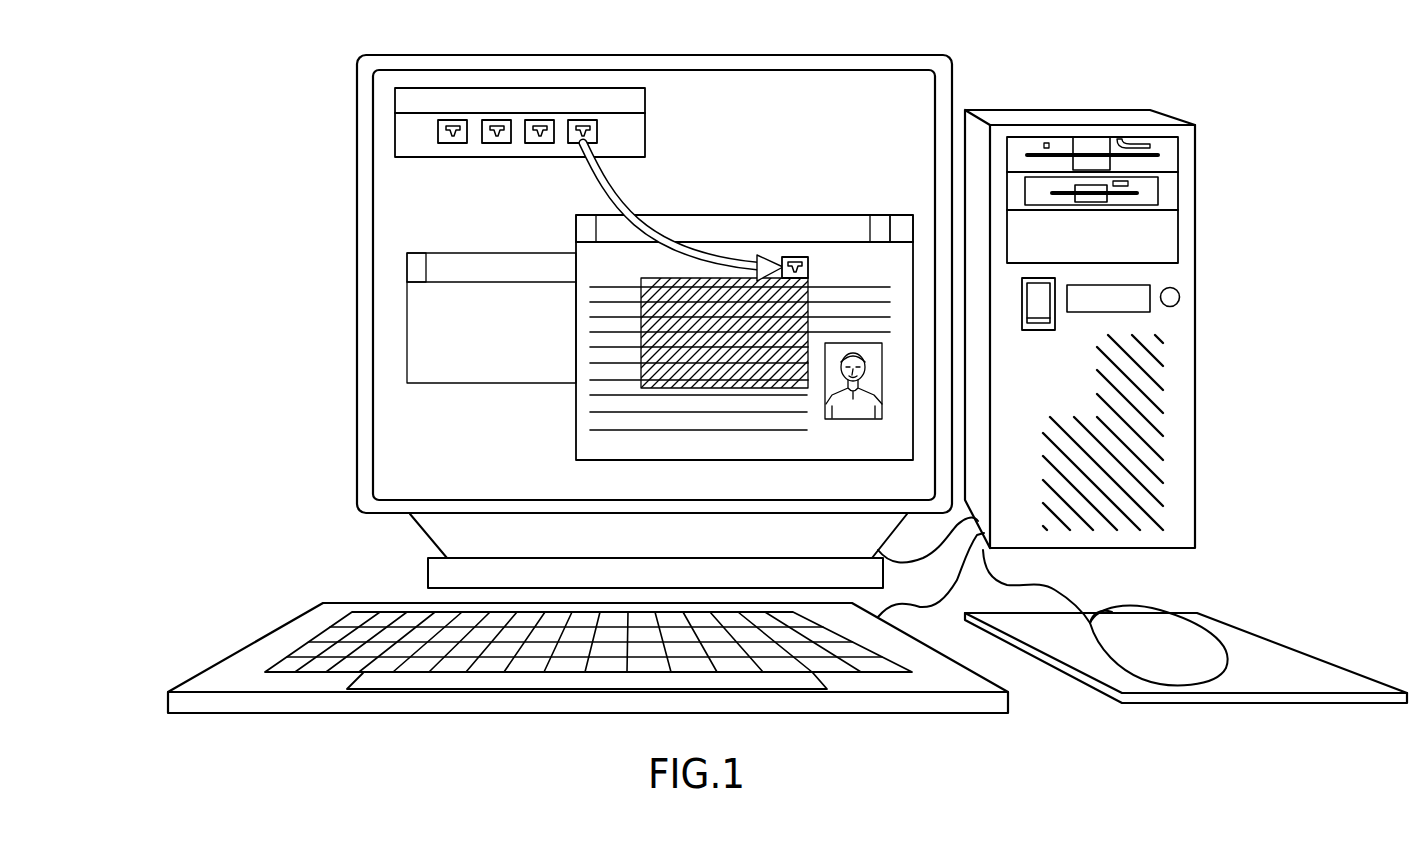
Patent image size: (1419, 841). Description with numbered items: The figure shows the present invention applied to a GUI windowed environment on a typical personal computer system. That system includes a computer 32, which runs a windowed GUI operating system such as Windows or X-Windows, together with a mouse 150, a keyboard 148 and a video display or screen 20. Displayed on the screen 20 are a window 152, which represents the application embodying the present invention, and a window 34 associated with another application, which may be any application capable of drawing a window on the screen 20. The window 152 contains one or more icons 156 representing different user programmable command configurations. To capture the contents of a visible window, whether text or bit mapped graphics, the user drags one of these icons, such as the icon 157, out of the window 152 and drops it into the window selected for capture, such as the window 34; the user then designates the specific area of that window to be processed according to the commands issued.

The video display 20 is at (408, 453).
The computer 32 is at (1187, 272).
The window 34 is at (845, 253).
The keyboard 148 is at (292, 637).
The mouse 150 is at (1190, 640).
The window 152 is at (647, 133).
The icons 156 is at (568, 141).
The icon 157 is at (798, 257).